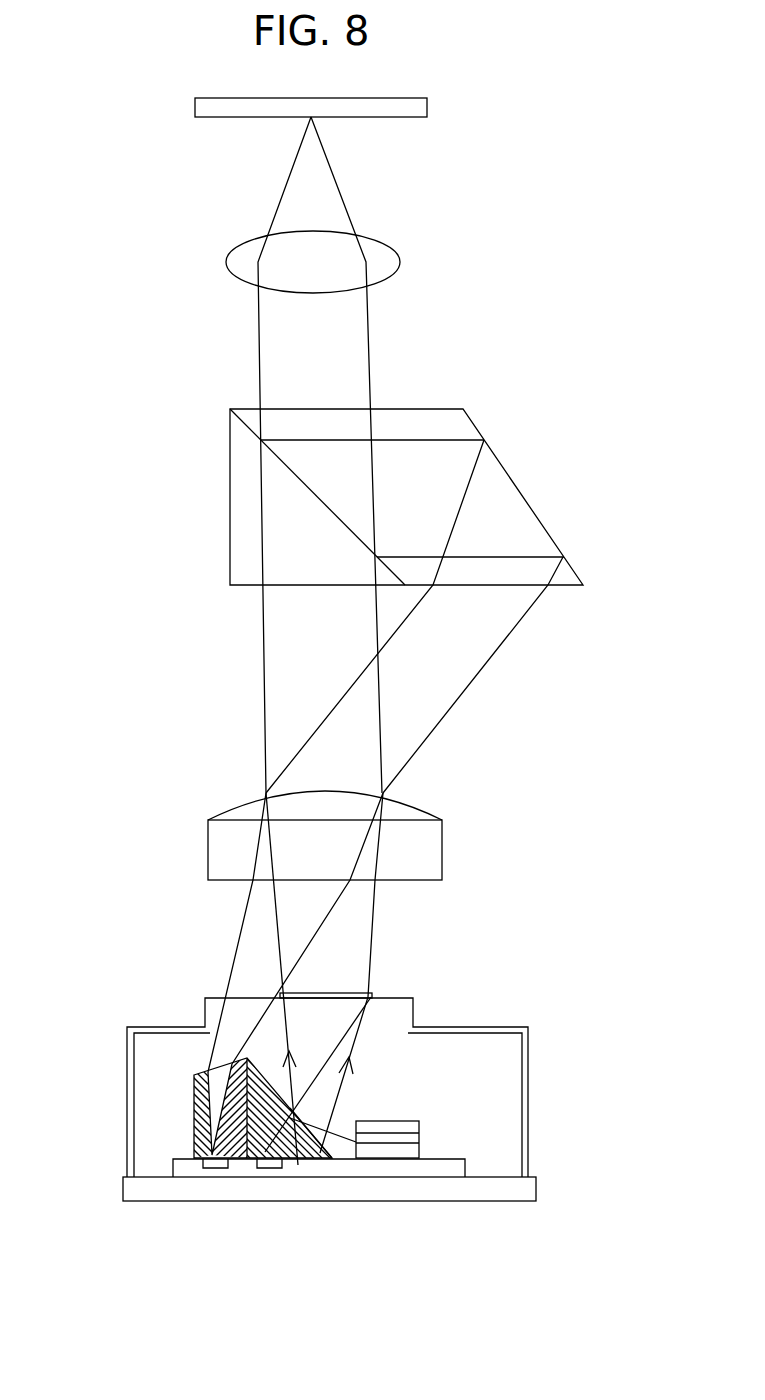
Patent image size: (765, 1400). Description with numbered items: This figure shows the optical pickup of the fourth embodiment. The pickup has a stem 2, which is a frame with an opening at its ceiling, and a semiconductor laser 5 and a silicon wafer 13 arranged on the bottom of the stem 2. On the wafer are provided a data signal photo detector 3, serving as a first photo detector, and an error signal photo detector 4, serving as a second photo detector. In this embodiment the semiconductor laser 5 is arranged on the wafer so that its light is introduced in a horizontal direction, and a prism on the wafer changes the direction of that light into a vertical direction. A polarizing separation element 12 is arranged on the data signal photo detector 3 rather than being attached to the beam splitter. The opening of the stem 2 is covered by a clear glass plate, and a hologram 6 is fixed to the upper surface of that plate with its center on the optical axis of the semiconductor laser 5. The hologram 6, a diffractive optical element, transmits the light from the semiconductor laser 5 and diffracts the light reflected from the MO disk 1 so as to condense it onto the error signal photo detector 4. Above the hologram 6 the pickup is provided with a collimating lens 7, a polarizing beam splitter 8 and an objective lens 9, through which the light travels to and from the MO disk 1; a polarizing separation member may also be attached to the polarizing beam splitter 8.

The MO disk 1 is at (427, 106).
The stem 2 is at (528, 1190).
The data signal photo detector 3 is at (218, 1163).
The error signal photo detector 4 is at (270, 1165).
The semiconductor laser 5 is at (385, 1153).
The hologram 6 is at (343, 993).
The collimating lens 7 is at (425, 847).
The polarizing beam splitter 8 is at (497, 485).
The objective lens 9 is at (390, 260).
The polarizing separation element 12 is at (193, 1112).
The silicon wafer 13 is at (298, 1153).